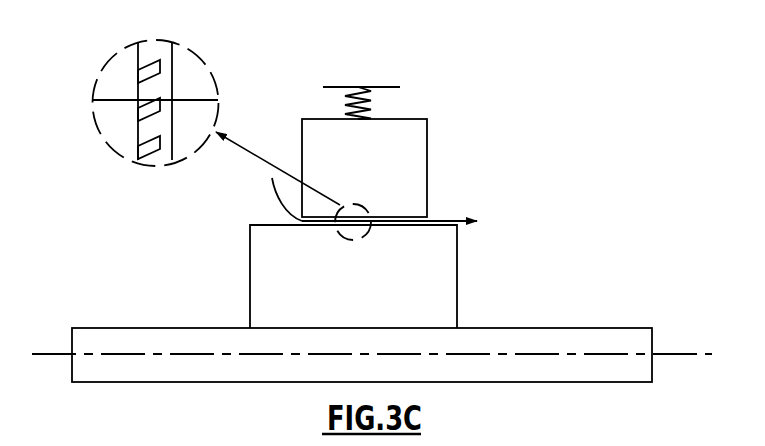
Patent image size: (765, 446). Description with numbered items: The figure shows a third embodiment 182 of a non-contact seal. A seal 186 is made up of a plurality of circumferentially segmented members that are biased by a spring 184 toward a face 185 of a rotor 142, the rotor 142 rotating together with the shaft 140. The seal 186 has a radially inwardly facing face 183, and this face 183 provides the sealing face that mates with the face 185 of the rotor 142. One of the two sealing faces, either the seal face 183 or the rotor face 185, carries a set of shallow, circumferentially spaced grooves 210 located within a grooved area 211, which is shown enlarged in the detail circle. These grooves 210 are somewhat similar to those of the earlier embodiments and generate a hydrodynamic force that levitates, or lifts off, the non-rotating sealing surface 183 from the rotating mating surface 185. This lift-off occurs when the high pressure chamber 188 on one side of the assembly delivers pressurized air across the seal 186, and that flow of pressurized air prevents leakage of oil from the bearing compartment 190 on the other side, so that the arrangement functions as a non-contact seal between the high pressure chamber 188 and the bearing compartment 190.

The shaft 140 is at (533, 340).
The rotor 142 is at (435, 290).
The embodiment 182 is at (424, 152).
The radially inwardly facing face 183 is at (382, 223).
The spring 184 is at (368, 103).
The face 185 is at (263, 224).
The seal 186 is at (427, 173).
The high pressure chamber 188 is at (192, 220).
The bearing compartment 190 is at (546, 238).
The grooves 210 is at (152, 148).
The grooved area 211 is at (358, 204).